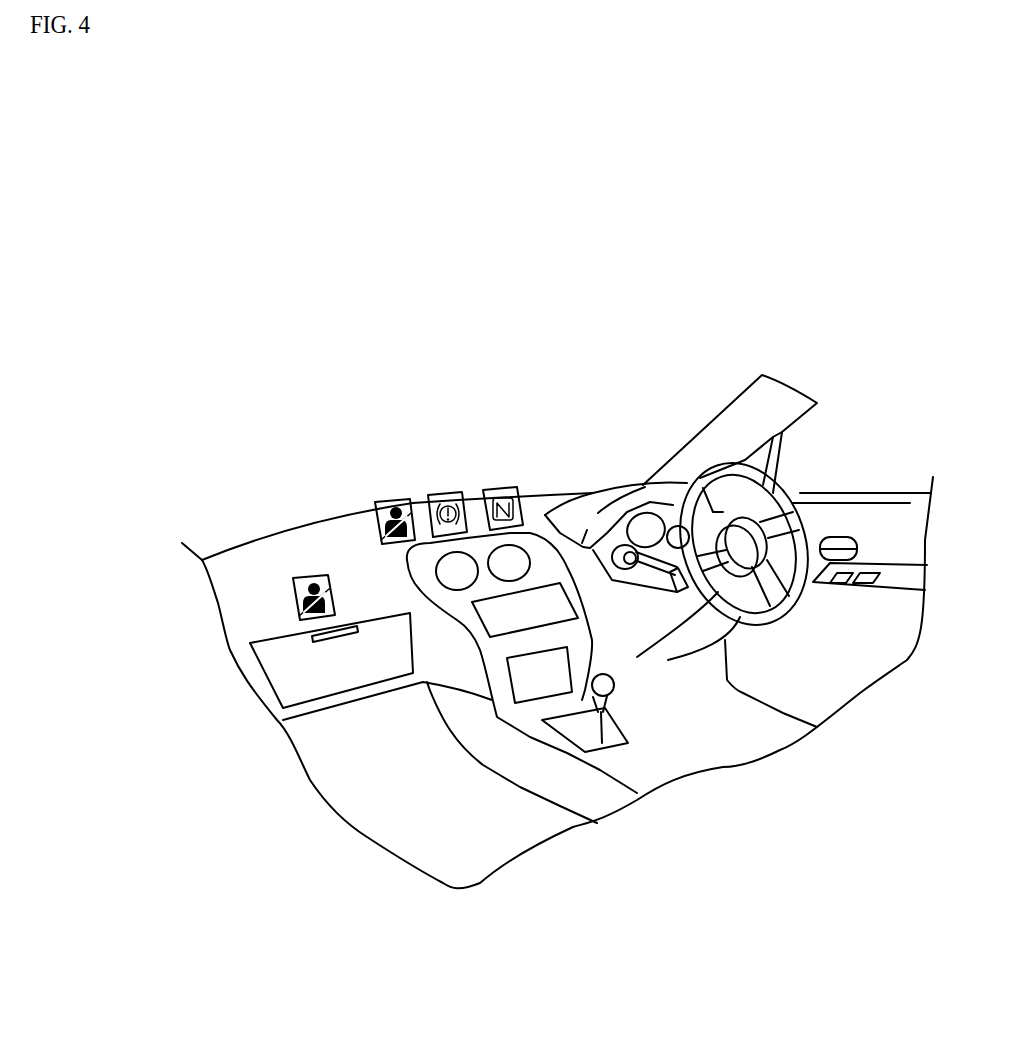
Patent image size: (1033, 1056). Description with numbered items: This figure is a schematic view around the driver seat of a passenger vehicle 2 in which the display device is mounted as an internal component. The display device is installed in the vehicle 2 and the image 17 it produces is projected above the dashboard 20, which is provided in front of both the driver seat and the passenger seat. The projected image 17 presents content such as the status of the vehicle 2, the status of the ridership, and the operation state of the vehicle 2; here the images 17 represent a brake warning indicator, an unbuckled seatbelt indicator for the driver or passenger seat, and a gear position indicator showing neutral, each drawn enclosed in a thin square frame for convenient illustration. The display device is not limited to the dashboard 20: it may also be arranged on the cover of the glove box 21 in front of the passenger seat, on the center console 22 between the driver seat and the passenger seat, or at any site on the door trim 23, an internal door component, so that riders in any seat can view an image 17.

The vehicle 2 is at (600, 267).
The image 17 is at (310, 577).
The dashboard 20 is at (540, 502).
The glove box 21 is at (280, 675).
The center console 22 is at (525, 687).
The door trim 23 is at (825, 665).